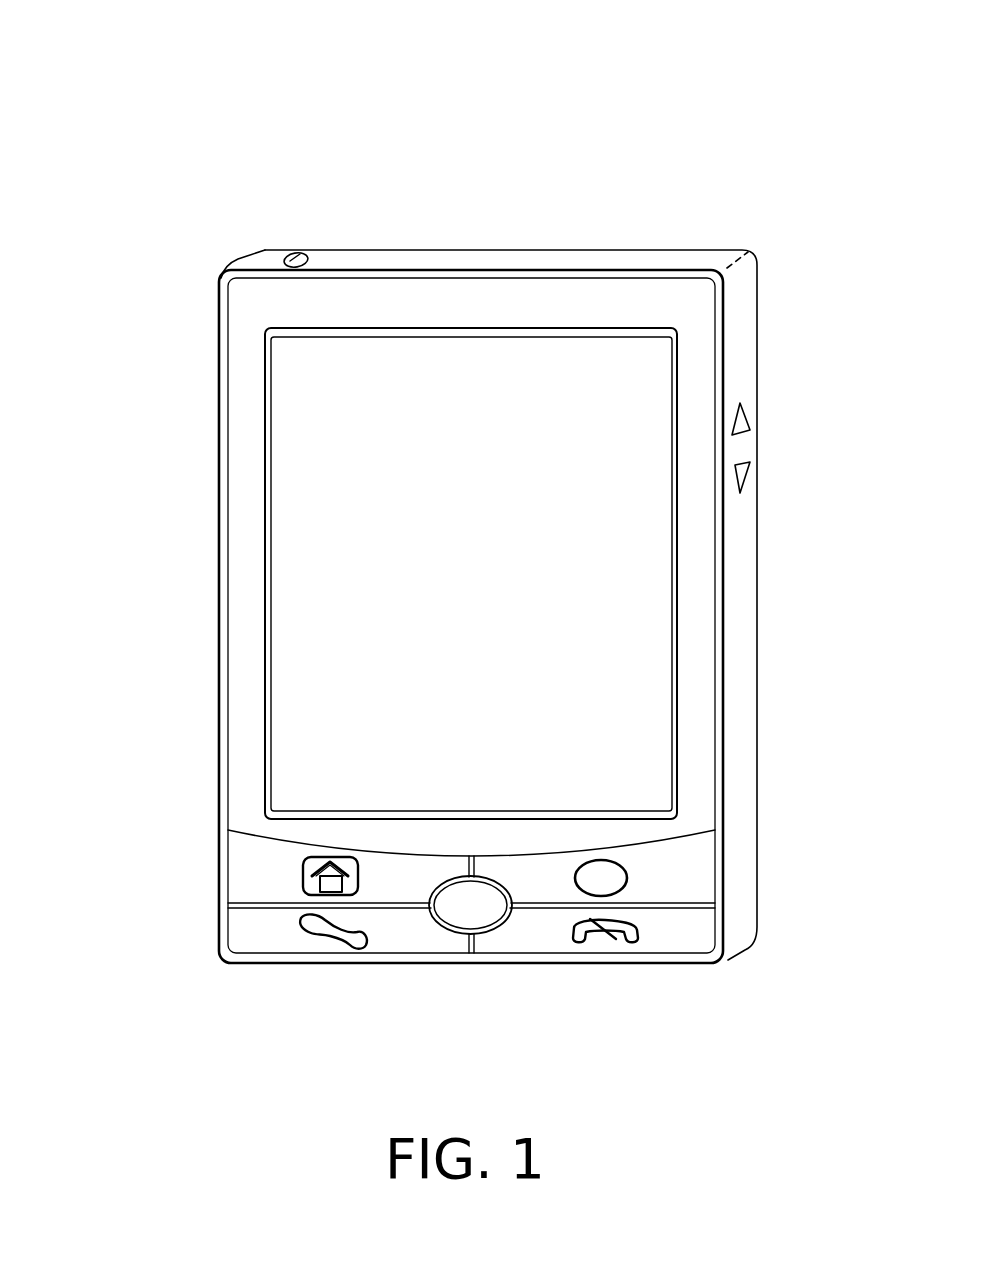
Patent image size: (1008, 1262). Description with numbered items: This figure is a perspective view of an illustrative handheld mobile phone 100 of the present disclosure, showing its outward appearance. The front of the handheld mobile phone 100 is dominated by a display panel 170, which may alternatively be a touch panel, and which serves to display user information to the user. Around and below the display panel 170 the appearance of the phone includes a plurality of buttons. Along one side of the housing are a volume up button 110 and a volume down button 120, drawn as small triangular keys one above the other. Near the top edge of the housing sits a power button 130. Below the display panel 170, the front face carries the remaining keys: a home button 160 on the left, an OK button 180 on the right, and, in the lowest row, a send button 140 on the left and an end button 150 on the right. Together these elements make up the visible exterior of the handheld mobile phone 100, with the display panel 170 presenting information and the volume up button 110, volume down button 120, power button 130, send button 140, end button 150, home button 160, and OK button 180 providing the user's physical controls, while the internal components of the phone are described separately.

The handheld mobile phone 100 is at (705, 103).
The volume up button 110 is at (736, 431).
The volume down button 120 is at (740, 475).
The power button 130 is at (296, 256).
The send button 140 is at (272, 935).
The end button 150 is at (683, 933).
The home button 160 is at (262, 882).
The display panel 170 is at (327, 581).
The OK button 180 is at (683, 873).